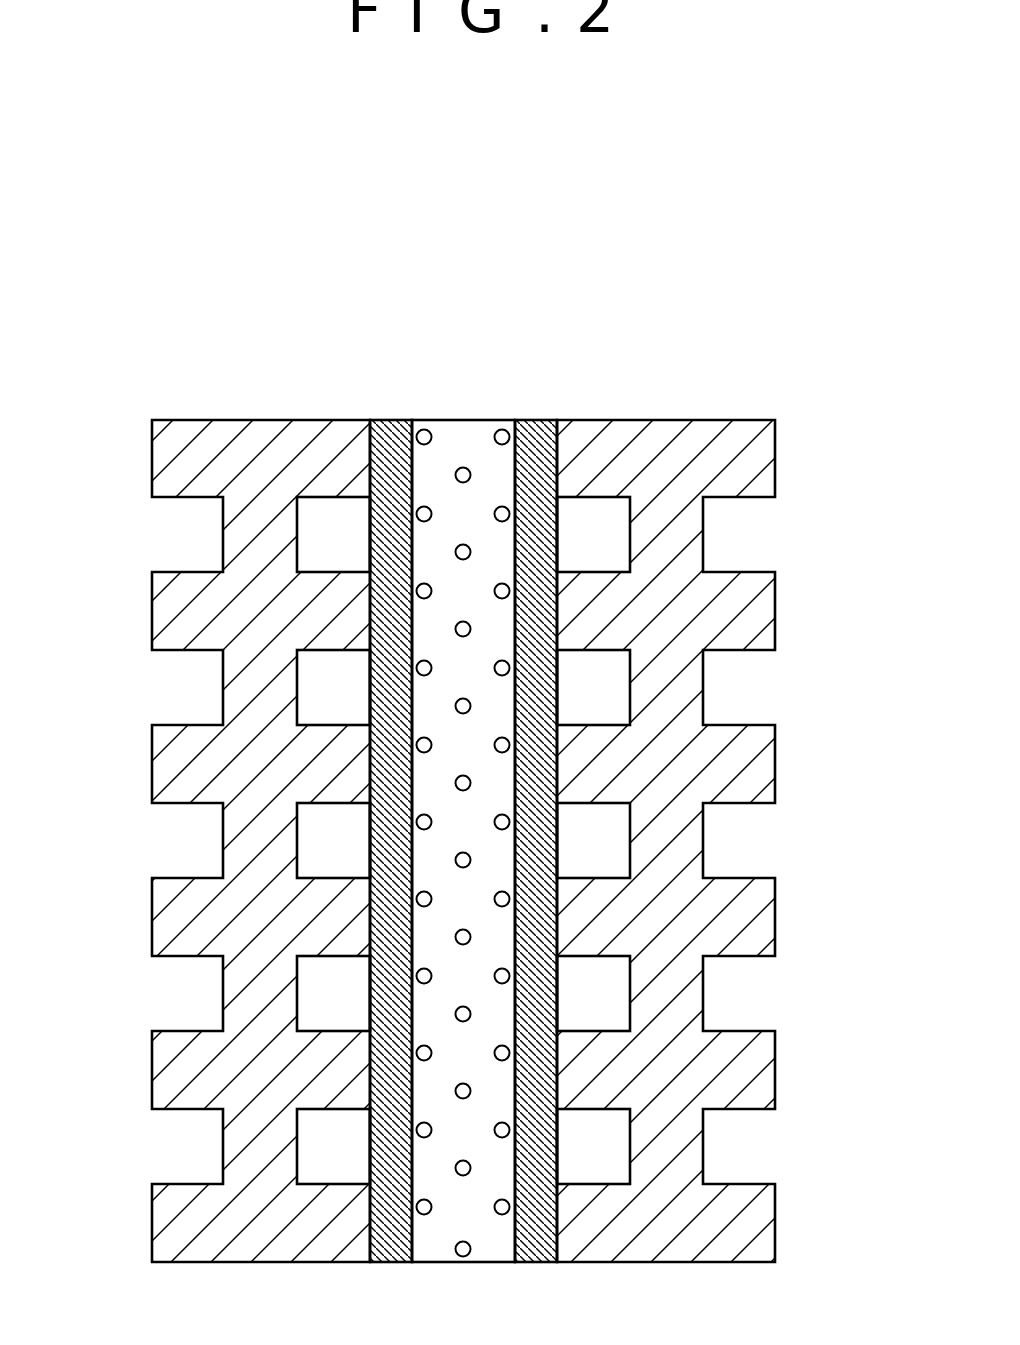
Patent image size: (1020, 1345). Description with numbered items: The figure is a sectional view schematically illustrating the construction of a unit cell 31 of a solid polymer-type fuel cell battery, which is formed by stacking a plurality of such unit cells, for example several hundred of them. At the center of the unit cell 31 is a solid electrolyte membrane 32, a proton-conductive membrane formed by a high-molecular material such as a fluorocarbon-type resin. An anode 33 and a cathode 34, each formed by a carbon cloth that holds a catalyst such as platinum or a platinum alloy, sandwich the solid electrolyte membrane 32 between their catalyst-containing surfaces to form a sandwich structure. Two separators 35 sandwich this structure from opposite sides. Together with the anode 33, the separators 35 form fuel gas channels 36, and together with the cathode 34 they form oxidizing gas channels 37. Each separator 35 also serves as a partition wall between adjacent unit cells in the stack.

The unit cell 31 is at (630, 328).
The solid electrolyte membrane 32 is at (463, 420).
The anode 33 is at (397, 420).
The cathode 34 is at (535, 420).
The separator 35 is at (286, 420).
The fuel gas channel 36 is at (332, 707).
The oxidizing gas channel 37 is at (603, 697).